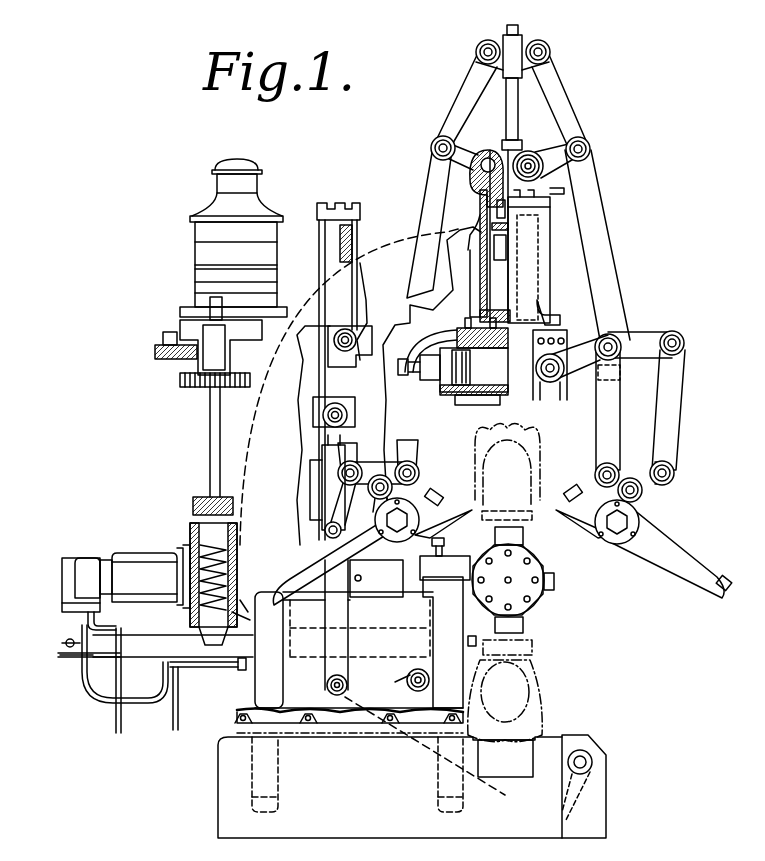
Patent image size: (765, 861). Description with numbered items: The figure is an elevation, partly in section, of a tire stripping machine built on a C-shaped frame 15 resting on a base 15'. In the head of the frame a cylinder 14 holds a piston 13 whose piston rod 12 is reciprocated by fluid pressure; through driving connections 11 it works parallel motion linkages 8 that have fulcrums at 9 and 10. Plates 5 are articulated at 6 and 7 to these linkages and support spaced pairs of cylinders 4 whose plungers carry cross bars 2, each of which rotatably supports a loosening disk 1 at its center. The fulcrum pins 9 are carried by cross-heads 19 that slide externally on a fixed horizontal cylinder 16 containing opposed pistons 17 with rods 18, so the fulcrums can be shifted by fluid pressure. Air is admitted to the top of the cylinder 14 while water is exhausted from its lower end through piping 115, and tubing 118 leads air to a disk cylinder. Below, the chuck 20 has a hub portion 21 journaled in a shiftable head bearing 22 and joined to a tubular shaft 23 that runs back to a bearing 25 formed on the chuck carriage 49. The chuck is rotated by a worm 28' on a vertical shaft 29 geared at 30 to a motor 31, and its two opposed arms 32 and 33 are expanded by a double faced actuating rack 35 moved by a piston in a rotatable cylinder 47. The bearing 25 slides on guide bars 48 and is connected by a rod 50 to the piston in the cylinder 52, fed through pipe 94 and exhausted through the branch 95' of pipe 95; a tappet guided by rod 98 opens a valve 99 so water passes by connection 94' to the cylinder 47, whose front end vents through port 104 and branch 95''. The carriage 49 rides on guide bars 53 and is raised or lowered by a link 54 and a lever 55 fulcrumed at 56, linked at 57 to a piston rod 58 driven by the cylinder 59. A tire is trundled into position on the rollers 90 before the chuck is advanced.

The loosening disks 1 is at (447, 518).
The cross bars 2 is at (442, 505).
The cylinders 4 is at (300, 545).
The plates 5 is at (420, 492).
The articulation 6 is at (415, 468).
The articulation 7 is at (356, 466).
The parallel motion linkages 8 is at (412, 270).
The fulcrum pins 9 is at (553, 364).
The fulcrums 10 is at (489, 158).
The actuating driving connections 11 is at (476, 52).
The piston rod 12 is at (512, 112).
The piston 13 is at (491, 245).
The cylinder 14 is at (482, 290).
The C-shaped frame 15 is at (351, 383).
The base 15' is at (412, 784).
The cylinder 16 is at (497, 388).
The opposed pistons 17 is at (470, 392).
The rods 18 is at (436, 372).
The cross-heads 19 is at (557, 396).
The chuck 20 is at (544, 606).
The hub portion 21 is at (460, 562).
The head bearing 22 is at (394, 614).
The tubular shaft 23 is at (324, 597).
The bearing 25 is at (241, 614).
The worm 28' is at (194, 584).
The vertical shaft 29 is at (211, 438).
The gearing 30 is at (178, 381).
The motor 31 is at (205, 255).
The chuck arm 32 is at (512, 537).
The chuck arm 33 is at (512, 628).
The actuating rack 35 is at (555, 580).
The cylinder 47 is at (140, 562).
The guide bars 48 is at (359, 642).
The chuck carriage 49 is at (312, 670).
The rod 50 is at (472, 636).
The cylinder 52 is at (157, 652).
The guide bars 53 is at (280, 773).
The link 54 is at (409, 698).
The lever 55 is at (358, 702).
The fulcrum 56 is at (592, 758).
The link connection 57 is at (322, 522).
The piston rod 58 is at (332, 440).
The cylinder 59 is at (325, 262).
The rollers 90 is at (527, 745).
The pipe 94 is at (132, 687).
The connection 94' is at (108, 619).
The pipe 95 is at (189, 706).
The branch 95' is at (208, 680).
The branch 95'' is at (125, 679).
The rod 98 is at (66, 657).
The valve 99 is at (68, 640).
The port 104 is at (64, 604).
The piping 115 is at (553, 315).
The tubing 118 is at (270, 650).